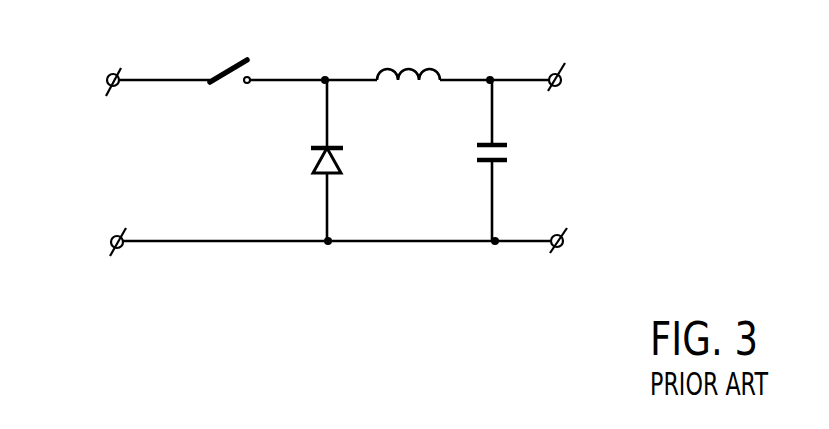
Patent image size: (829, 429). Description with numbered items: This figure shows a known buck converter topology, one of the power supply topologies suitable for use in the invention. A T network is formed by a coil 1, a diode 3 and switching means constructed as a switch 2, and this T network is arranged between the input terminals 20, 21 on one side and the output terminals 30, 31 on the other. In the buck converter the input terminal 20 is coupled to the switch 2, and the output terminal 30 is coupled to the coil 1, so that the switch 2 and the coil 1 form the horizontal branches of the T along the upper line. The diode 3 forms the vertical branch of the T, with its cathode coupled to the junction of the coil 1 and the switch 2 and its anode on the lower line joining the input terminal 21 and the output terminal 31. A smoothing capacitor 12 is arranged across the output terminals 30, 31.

The coil 1 is at (404, 67).
The switch 2 is at (232, 70).
The diode 3 is at (312, 163).
The smoothing capacitor 12 is at (501, 152).
The input terminal 20 is at (108, 72).
The input terminal 21 is at (109, 241).
The output terminal 30 is at (573, 69).
The output terminal 31 is at (577, 241).